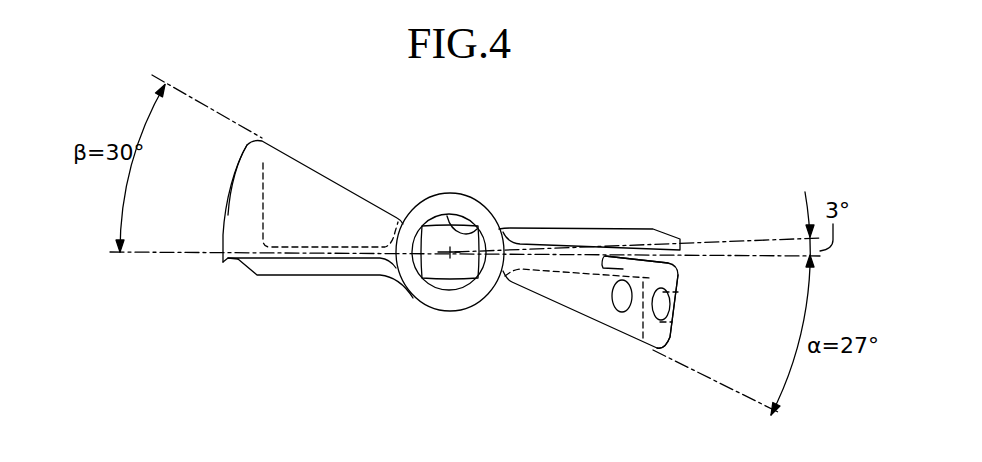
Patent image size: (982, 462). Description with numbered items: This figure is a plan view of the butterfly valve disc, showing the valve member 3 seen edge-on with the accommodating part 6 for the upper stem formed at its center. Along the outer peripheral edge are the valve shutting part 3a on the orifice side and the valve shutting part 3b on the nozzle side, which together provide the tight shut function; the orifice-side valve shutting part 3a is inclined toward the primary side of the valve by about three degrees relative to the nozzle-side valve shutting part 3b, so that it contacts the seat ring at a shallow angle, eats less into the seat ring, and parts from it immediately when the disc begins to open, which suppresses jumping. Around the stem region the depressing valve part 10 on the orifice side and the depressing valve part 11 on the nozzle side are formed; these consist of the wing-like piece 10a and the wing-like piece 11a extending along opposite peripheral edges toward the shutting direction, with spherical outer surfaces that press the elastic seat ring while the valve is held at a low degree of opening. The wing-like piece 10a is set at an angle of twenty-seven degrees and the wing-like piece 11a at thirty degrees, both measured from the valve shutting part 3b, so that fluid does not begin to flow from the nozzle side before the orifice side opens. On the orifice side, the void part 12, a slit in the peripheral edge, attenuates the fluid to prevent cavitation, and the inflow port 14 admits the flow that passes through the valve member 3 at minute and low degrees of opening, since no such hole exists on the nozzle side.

The valve member 3 is at (318, 280).
The valve shutting part on the orifice side 3a is at (683, 243).
The valve shutting part on the nozzle side 3b is at (227, 262).
The accommodating part 6 is at (473, 228).
The depressing valve part on the orifice side 10 is at (670, 275).
The wing-like piece on the orifice side 10a is at (667, 340).
The depressing valve part on the nozzle side 11 is at (243, 205).
The wing-like piece on the nozzle side 11a is at (247, 175).
The void part 12 is at (623, 262).
The inflow port 14 is at (625, 306).